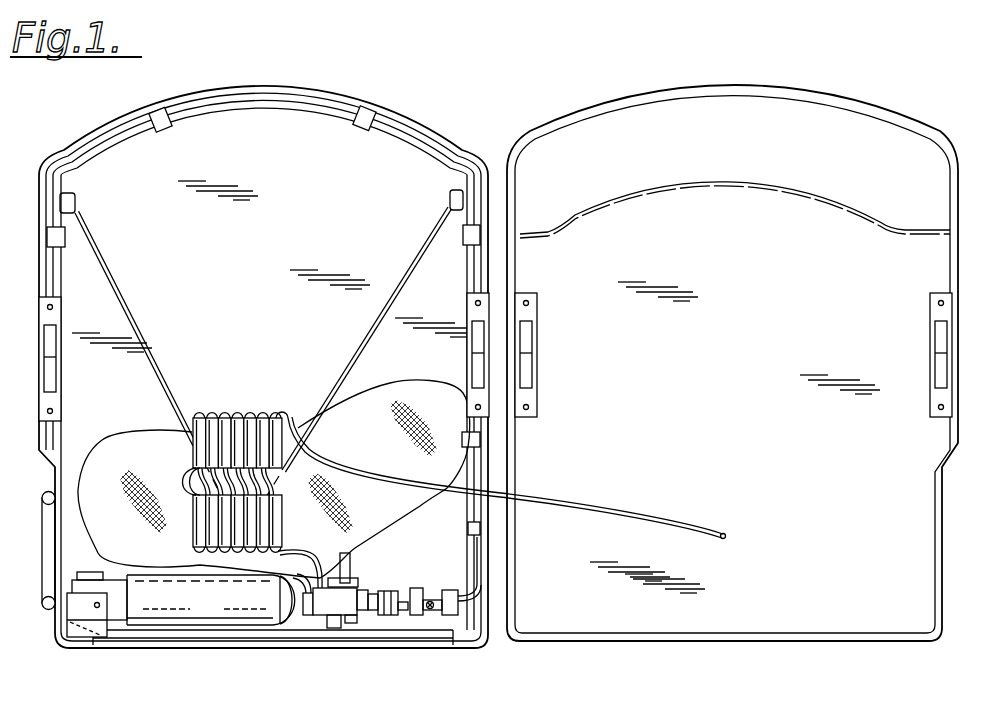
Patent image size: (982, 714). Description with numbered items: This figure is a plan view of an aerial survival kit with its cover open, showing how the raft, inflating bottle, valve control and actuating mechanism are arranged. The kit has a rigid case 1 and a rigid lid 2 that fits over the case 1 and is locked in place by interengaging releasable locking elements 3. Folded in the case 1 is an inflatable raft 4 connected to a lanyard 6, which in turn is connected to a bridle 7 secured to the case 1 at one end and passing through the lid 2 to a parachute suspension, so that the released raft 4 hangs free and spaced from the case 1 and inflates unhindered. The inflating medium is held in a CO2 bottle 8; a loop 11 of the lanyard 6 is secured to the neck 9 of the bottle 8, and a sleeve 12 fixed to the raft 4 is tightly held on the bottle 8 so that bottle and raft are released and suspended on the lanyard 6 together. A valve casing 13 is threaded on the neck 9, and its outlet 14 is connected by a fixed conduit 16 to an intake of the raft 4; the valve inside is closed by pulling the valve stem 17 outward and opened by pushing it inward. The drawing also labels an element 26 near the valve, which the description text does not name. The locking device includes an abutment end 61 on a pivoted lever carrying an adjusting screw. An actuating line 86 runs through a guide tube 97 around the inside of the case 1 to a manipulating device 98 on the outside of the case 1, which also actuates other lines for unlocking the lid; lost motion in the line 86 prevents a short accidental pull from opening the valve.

The rigid case 1 is at (263, 367).
The rigid lid 2 is at (856, 130).
The interengaging releasable locking elements 3 is at (44, 342).
The inflatable raft 4 is at (393, 514).
The lanyard 6 is at (292, 549).
The bridle 7 is at (137, 313).
The CO2 bottle 8 is at (291, 632).
The neck 9 is at (309, 616).
The loop 11 is at (297, 581).
The sleeve 12 is at (221, 606).
The valve casing 13 is at (348, 612).
The outlet 14 is at (335, 585).
The fixed conduit 16 is at (348, 566).
The valve stem 17 is at (371, 604).
The coupling sleeve 26 is at (386, 590).
The abutment end 61 is at (425, 609).
The actuating line 86 is at (444, 597).
The guide tube 97 is at (432, 148).
The manipulating device 98 is at (45, 541).